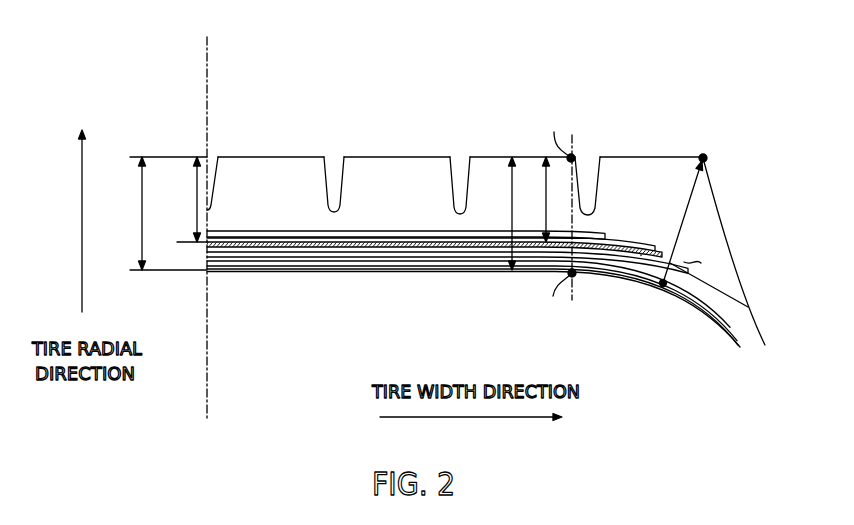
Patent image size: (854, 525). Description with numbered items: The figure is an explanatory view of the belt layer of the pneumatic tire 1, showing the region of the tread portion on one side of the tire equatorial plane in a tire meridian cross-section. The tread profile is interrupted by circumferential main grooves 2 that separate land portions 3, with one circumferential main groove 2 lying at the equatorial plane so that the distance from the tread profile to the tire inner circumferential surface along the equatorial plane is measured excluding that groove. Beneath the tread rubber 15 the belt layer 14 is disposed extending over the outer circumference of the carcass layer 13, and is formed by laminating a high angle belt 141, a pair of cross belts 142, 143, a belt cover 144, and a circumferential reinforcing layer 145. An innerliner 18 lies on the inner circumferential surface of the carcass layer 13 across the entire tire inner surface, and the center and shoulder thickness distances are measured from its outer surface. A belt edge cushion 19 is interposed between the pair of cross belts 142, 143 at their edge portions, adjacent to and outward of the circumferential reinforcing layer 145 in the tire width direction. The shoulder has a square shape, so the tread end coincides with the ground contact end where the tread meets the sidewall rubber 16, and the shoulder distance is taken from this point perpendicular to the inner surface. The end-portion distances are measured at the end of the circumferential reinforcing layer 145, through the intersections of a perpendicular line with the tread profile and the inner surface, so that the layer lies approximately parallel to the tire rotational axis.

The pneumatic tire 1 is at (747, 88).
The circumferential main groove 2 is at (214, 157).
The land portion 3 is at (269, 156).
The carcass layer 13 is at (707, 318).
The belt layer 14 is at (527, 317).
The tread rubber 15 is at (675, 133).
The sidewall rubber 16 is at (740, 326).
The innerliner 18 is at (255, 272).
The belt edge cushion 19 is at (641, 255).
The high angle belt 141 is at (492, 267).
The cross belt 142 is at (460, 258).
The cross belt 143 is at (412, 248).
The belt cover 144 is at (365, 243).
The circumferential reinforcing layer 145 is at (316, 249).